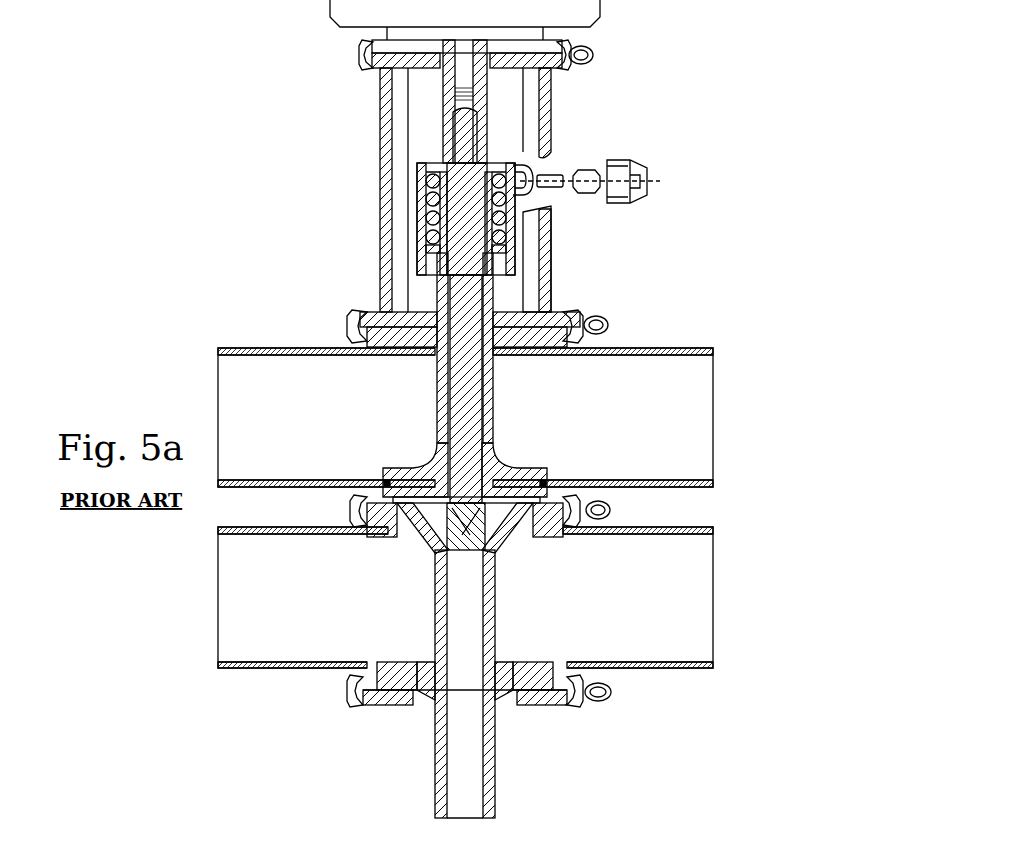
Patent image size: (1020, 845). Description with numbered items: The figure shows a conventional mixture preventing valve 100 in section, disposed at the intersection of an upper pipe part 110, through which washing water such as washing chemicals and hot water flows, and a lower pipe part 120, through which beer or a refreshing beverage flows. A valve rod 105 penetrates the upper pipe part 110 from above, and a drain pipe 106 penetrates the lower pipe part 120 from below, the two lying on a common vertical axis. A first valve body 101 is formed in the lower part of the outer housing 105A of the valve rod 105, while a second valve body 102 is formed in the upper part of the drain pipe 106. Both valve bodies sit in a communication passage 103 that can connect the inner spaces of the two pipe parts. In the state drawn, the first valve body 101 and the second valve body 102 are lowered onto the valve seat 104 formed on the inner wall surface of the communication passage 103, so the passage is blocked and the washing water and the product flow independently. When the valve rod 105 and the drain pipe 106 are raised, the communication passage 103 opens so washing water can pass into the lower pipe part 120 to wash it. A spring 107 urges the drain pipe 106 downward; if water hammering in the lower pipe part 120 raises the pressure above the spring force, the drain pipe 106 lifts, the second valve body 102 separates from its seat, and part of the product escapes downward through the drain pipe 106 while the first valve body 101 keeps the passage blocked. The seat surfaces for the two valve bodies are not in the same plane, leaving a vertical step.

The mixture preventing valve 100 is at (740, 250).
The first valve body 101 is at (518, 466).
The second valve body 102 is at (520, 542).
The communication passage 103 is at (517, 535).
The valve seat 104 is at (392, 521).
The valve rod 105 is at (473, 292).
The outer housing 105A is at (497, 382).
The drain pipe 106 is at (492, 775).
The spring 107 is at (417, 191).
The upper pipe part 110 is at (707, 360).
The lower pipe part 120 is at (700, 585).